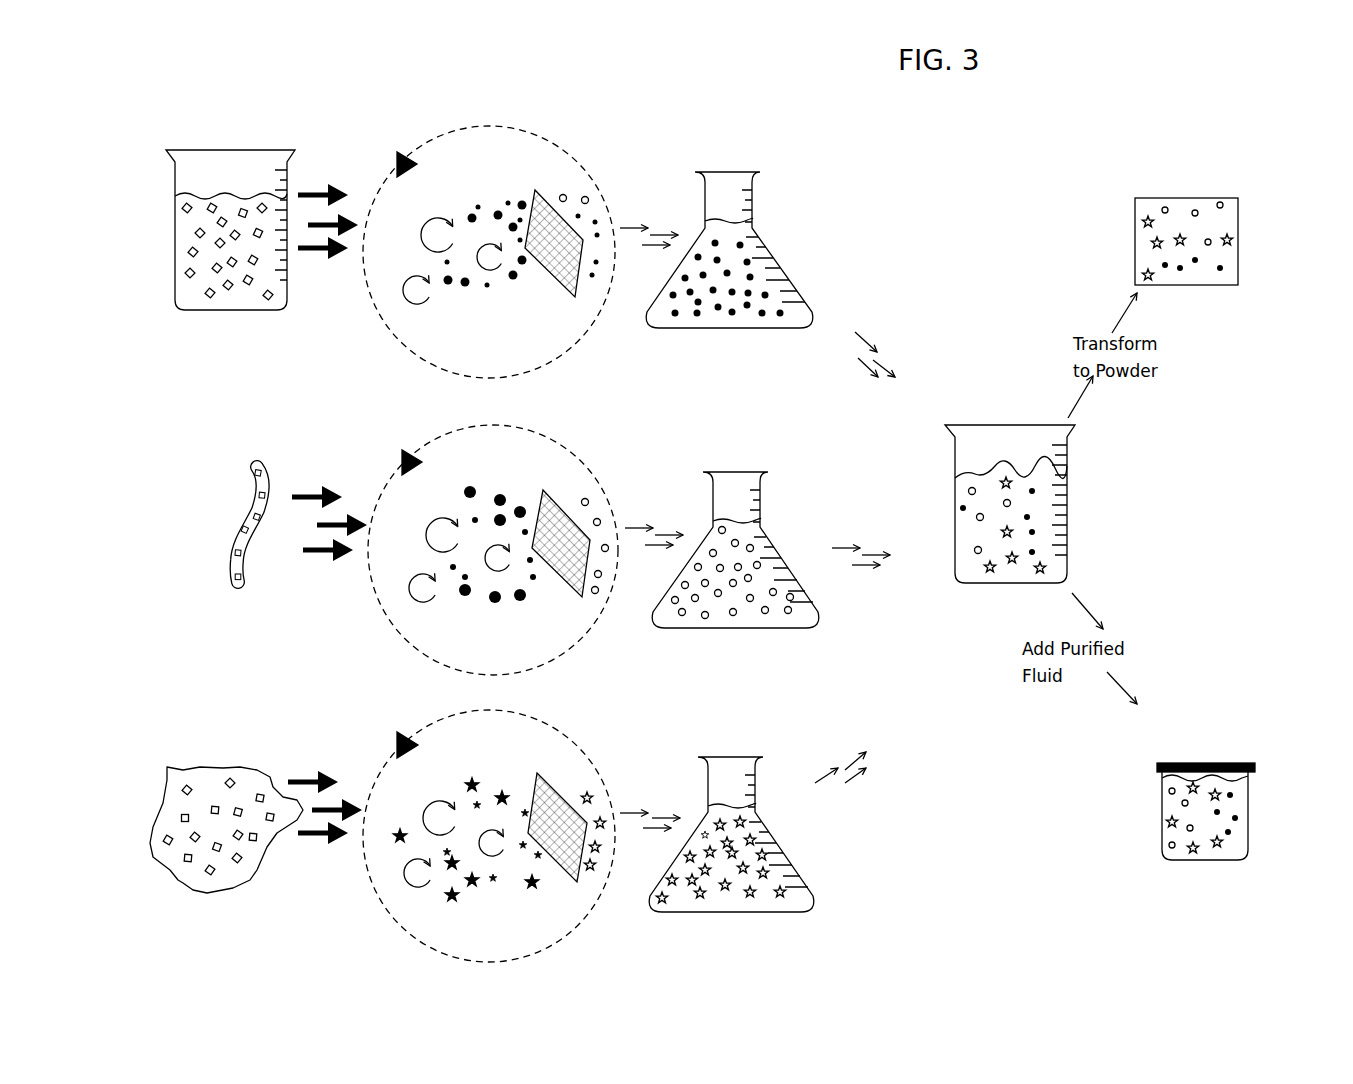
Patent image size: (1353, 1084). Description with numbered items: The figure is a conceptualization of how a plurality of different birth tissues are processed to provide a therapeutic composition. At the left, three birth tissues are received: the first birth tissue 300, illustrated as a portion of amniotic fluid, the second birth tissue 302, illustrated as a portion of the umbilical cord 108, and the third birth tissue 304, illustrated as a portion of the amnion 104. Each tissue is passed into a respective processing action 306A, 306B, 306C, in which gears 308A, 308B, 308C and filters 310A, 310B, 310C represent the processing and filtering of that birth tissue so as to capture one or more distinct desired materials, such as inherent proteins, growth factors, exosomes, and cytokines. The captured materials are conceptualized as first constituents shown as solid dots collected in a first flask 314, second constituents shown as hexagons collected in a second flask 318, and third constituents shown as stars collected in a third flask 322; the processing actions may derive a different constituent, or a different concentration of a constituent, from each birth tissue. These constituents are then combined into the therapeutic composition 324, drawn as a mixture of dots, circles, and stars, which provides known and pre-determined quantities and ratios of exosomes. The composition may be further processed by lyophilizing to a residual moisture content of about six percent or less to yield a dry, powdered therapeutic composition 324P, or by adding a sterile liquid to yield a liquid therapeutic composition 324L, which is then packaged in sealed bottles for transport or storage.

The first birth tissue 300 is at (231, 213).
The amnion 104 is at (227, 251).
The second birth tissue 302 is at (276, 498).
The umbilical cord 108 is at (262, 466).
The third birth tissue 304 is at (232, 769).
The first processing action 306A is at (489, 231).
The second processing action 306B is at (493, 533).
The third processing action 306C is at (489, 821).
The first gears 308A is at (455, 207).
The second gears 308B is at (437, 510).
The third gears 308C is at (453, 793).
The first filter 310A is at (545, 270).
The second filter 310B is at (553, 573).
The third filter 310C is at (558, 860).
The first flask 314 is at (729, 224).
The second flask 318 is at (735, 528).
The third flask 322 is at (731, 813).
The therapeutic composition 324 is at (987, 527).
The powdered therapeutic composition 324P is at (1139, 214).
The liquid therapeutic composition 324L is at (1164, 831).